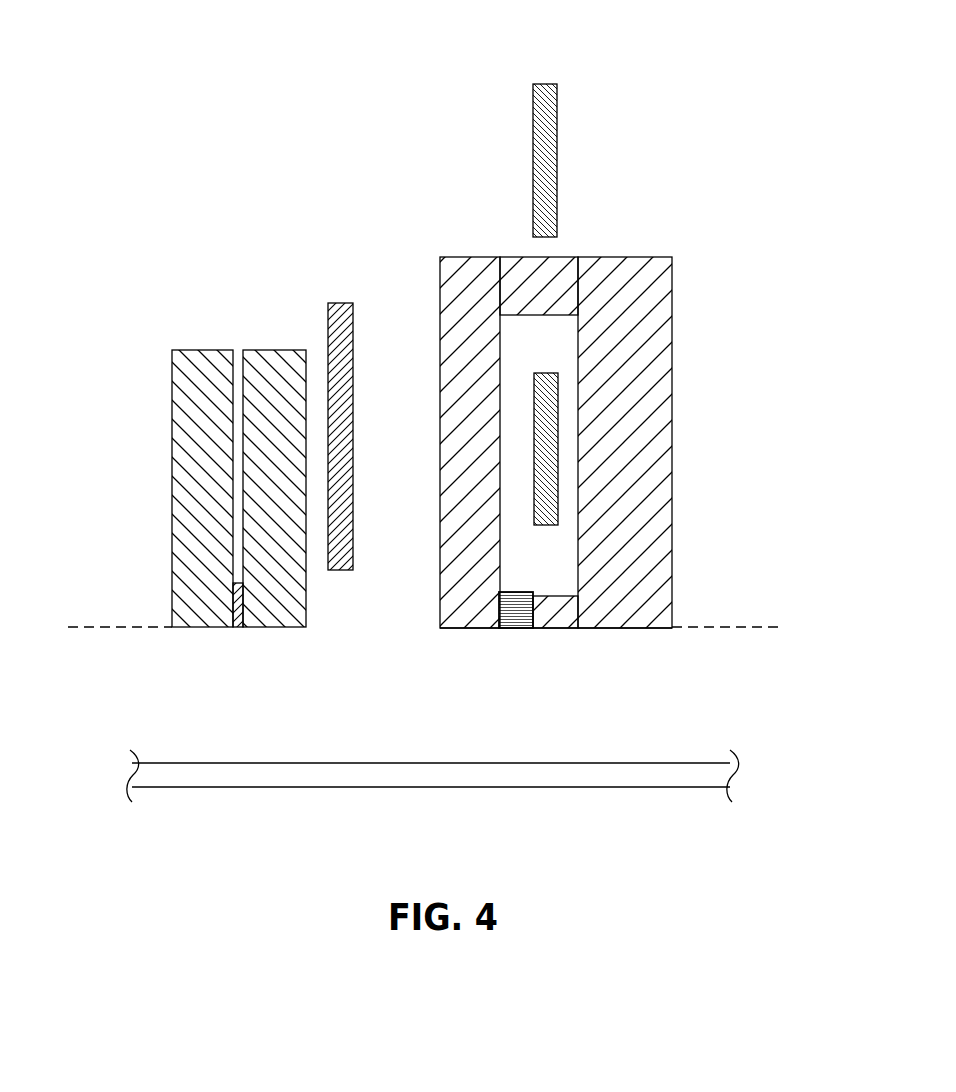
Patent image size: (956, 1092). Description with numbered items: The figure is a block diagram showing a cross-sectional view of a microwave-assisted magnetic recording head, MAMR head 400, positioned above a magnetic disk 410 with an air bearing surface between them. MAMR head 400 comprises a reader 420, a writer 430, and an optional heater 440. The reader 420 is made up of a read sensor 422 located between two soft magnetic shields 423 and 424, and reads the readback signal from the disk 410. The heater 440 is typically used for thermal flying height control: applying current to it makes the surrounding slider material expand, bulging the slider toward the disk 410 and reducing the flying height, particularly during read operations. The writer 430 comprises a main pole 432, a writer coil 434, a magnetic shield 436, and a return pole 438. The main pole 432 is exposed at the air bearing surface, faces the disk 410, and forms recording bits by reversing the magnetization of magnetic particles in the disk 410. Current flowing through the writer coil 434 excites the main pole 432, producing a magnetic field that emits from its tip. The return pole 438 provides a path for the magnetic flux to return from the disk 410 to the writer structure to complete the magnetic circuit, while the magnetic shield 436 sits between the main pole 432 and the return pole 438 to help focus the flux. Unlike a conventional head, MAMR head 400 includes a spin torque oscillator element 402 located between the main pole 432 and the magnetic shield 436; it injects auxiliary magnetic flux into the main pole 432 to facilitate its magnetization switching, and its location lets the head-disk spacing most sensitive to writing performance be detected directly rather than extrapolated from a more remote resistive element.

The MAMR head 400 is at (723, 151).
The spin torque oscillator element 402 is at (509, 631).
The disk 410 is at (717, 773).
The reader 420 is at (308, 295).
The read sensor 422 is at (237, 627).
The soft magnetic shield 423 is at (195, 478).
The soft magnetic shield 424 is at (293, 592).
The writer 430 is at (672, 78).
The main pole 432 is at (465, 258).
The writer coil 434 is at (553, 194).
The magnetic shield 436 is at (546, 618).
The return pole 438 is at (662, 333).
The heater 440 is at (340, 310).